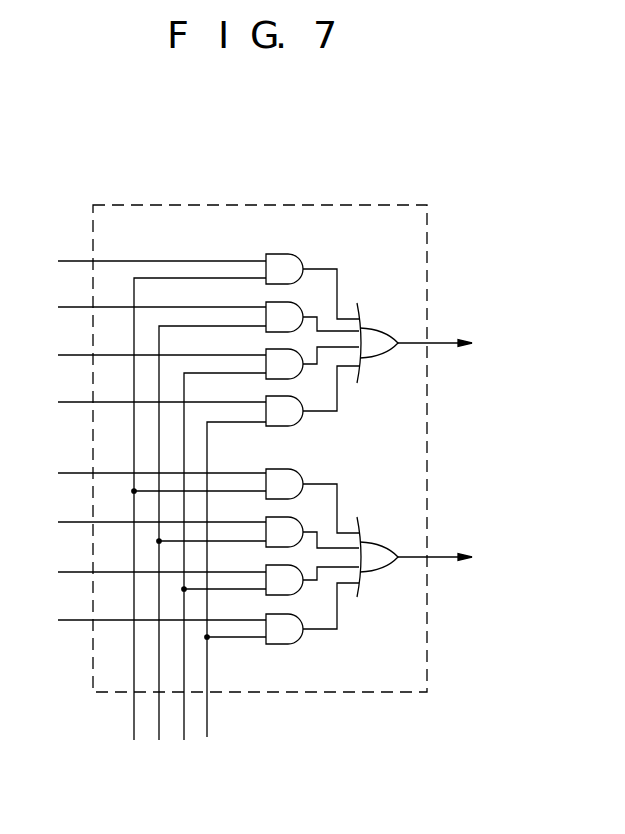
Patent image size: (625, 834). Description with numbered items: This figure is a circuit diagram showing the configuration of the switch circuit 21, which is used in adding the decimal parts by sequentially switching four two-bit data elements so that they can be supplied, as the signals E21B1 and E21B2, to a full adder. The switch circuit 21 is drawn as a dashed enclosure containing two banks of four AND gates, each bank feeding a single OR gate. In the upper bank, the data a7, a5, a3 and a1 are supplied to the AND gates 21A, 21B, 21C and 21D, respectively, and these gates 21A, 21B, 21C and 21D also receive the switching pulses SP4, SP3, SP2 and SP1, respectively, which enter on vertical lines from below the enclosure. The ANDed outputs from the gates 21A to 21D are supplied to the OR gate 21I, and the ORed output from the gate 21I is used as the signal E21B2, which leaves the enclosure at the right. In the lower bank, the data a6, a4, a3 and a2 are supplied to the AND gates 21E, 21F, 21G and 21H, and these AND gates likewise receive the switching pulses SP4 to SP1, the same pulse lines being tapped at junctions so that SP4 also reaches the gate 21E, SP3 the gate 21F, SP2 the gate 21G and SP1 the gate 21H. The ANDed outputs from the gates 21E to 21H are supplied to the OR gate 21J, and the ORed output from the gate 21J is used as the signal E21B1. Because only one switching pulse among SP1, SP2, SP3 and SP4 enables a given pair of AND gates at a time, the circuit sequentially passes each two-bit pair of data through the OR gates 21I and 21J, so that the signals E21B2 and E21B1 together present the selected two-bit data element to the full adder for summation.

The switch circuit 21 is at (399, 203).
The AND gate 21A is at (271, 260).
The AND gate 21B is at (271, 308).
The AND gate 21C is at (271, 355).
The AND gate 21D is at (271, 402).
The AND gate 21E is at (272, 473).
The AND gate 21F is at (272, 522).
The AND gate 21G is at (272, 572).
The AND gate 21H is at (272, 620).
The OR gate 21I is at (379, 328).
The OR gate 21J is at (376, 541).
The data a1 is at (146, 402).
The data a2 is at (146, 620).
The data a3 is at (146, 463).
The data a4 is at (146, 522).
The data a5 is at (146, 307).
The data a6 is at (146, 473).
The data a7 is at (146, 261).
The switching pulse SP1 is at (207, 737).
The switching pulse SP2 is at (217, 571).
The switching pulse SP3 is at (159, 740).
The switching pulse SP4 is at (188, 524).
The signal E21B1 is at (471, 559).
The signal E21B2 is at (471, 345).